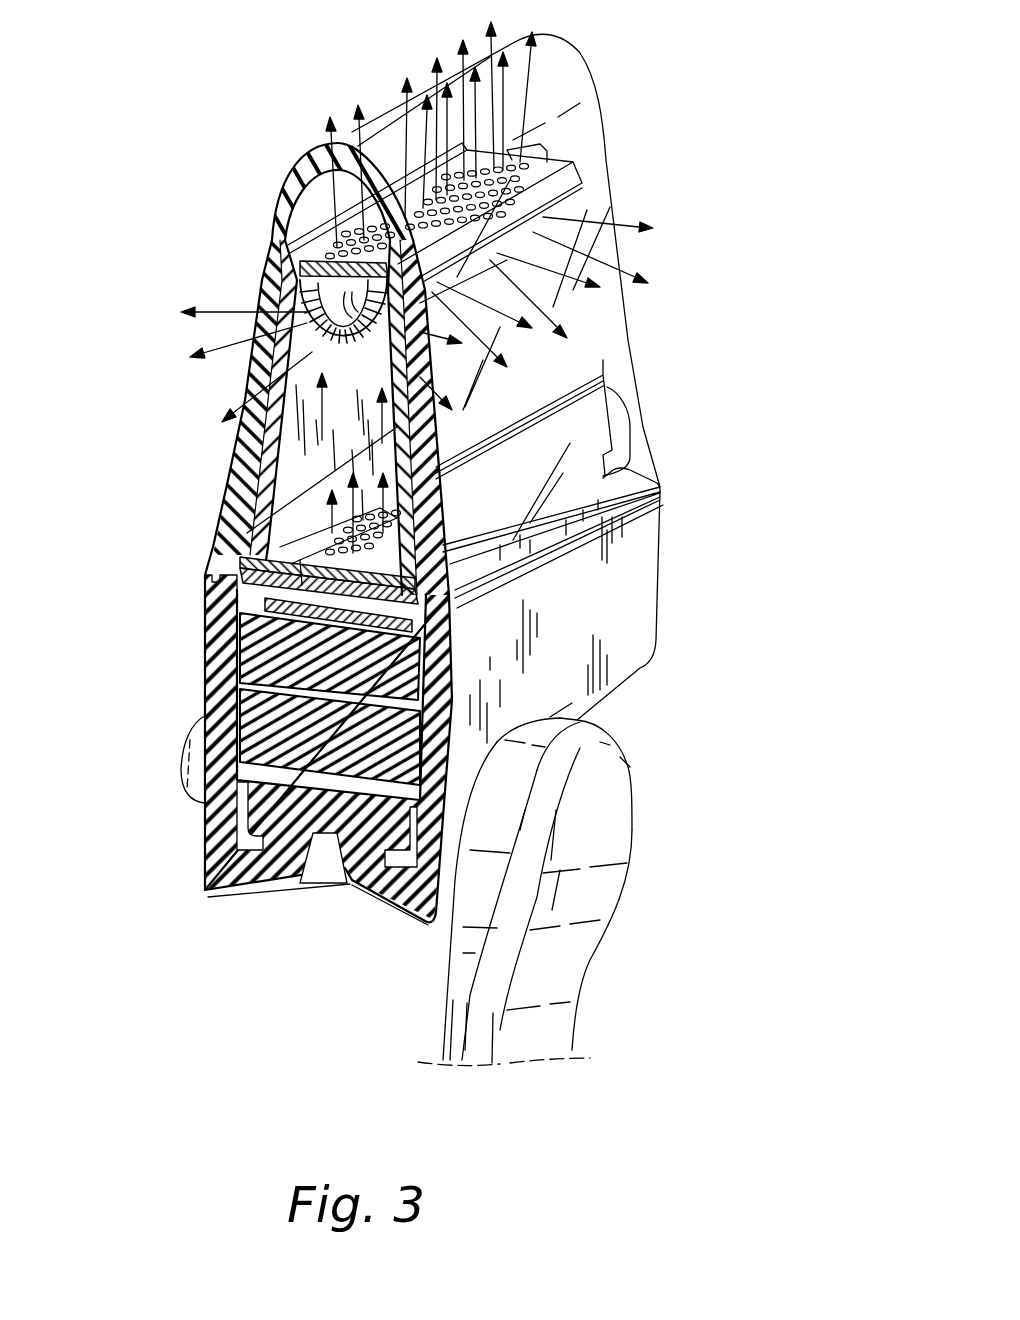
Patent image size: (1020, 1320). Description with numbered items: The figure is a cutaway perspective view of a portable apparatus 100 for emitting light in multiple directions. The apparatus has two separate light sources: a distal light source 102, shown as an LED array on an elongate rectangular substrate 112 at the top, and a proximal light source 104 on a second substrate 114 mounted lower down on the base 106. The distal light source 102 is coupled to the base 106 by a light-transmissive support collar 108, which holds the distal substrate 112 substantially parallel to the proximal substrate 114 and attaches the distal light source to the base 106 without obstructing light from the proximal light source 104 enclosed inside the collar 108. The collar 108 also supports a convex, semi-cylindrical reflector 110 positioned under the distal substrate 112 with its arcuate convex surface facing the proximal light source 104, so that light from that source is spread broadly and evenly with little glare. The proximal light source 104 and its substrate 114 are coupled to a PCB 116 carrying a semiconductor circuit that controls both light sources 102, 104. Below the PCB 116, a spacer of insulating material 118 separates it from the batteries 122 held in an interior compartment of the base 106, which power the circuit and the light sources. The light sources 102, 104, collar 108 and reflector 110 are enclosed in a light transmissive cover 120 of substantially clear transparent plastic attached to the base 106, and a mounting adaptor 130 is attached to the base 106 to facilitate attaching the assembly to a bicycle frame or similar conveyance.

The portable apparatus 100 is at (692, 158).
The distal light source 102 is at (347, 240).
The proximal light source 104 is at (318, 532).
The base 106 is at (633, 586).
The light-transmissive support collar 108 is at (262, 376).
The reflector 110 is at (300, 318).
The distal substrate 112 is at (340, 258).
The proximal substrate 114 is at (230, 523).
The PCB 116 is at (237, 563).
The spacer of insulating material 118 is at (240, 617).
The light transmissive cover 120 is at (560, 72).
The batteries 122 is at (237, 730).
The mounting adaptor 130 is at (247, 885).